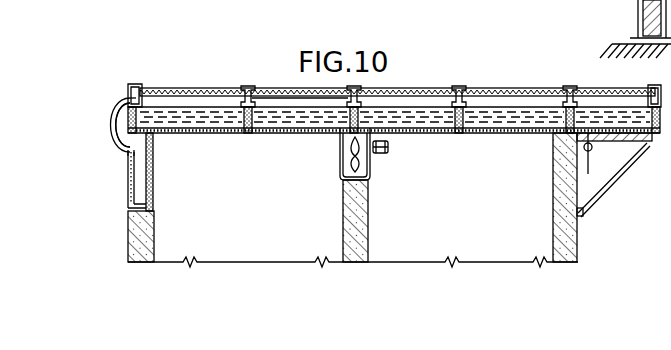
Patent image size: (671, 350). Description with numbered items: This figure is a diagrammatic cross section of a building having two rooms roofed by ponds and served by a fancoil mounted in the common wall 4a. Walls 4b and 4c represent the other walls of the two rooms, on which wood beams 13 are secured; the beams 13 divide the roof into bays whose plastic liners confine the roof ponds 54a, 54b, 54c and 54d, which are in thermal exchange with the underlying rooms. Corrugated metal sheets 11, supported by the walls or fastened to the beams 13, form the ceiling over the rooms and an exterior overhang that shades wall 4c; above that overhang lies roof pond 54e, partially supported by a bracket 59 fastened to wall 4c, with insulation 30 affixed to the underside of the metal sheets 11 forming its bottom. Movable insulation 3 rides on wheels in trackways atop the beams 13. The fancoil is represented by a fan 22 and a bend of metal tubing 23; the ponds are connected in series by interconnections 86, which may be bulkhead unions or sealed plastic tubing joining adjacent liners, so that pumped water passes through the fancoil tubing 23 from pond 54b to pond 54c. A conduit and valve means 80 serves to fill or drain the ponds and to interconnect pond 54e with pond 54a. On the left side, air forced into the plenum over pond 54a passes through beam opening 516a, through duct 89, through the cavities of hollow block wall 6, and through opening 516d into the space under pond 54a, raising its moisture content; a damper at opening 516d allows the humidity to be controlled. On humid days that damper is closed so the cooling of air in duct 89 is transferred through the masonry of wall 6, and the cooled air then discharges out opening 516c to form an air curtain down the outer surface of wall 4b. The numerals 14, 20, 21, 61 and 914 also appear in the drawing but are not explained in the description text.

The movable insulation 3 is at (205, 88).
The hollow block wall 6 is at (128, 177).
The corrugated metal sheets 11 is at (510, 130).
The wood beams 13 is at (116, 112).
The fitting 14 is at (132, 99).
The clip 20 is at (246, 92).
The elbow 21 is at (126, 146).
The fan 22 is at (368, 166).
The fancoil tubing 23 is at (341, 170).
The insulation 30 is at (610, 138).
The common wall 4a is at (346, 226).
The wall 4b is at (154, 230).
The wall 4c is at (556, 229).
The roof pond 54a is at (186, 118).
The roof pond 54b is at (306, 118).
The roof pond 54c is at (427, 118).
The roof pond 54d is at (490, 112).
The roof pond 54e is at (612, 115).
The bracket 59 is at (590, 196).
The cover strip 61 is at (277, 112).
The conduit and valve means 80 is at (625, 168).
The interconnection 86 is at (246, 130).
The duct 89 is at (111, 128).
The beam opening 516a is at (143, 102).
The opening 516c is at (132, 206).
The opening 516d is at (153, 160).
The wall member 914 is at (641, 16).